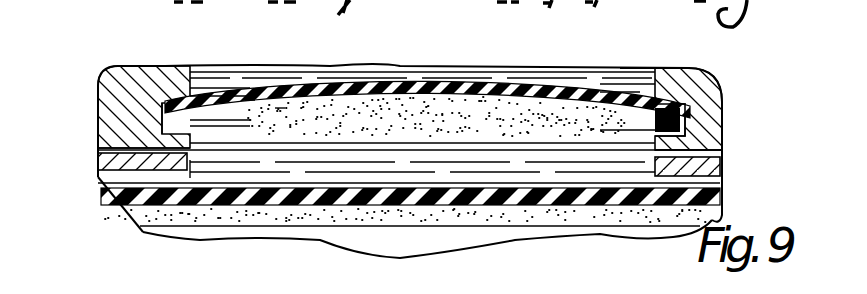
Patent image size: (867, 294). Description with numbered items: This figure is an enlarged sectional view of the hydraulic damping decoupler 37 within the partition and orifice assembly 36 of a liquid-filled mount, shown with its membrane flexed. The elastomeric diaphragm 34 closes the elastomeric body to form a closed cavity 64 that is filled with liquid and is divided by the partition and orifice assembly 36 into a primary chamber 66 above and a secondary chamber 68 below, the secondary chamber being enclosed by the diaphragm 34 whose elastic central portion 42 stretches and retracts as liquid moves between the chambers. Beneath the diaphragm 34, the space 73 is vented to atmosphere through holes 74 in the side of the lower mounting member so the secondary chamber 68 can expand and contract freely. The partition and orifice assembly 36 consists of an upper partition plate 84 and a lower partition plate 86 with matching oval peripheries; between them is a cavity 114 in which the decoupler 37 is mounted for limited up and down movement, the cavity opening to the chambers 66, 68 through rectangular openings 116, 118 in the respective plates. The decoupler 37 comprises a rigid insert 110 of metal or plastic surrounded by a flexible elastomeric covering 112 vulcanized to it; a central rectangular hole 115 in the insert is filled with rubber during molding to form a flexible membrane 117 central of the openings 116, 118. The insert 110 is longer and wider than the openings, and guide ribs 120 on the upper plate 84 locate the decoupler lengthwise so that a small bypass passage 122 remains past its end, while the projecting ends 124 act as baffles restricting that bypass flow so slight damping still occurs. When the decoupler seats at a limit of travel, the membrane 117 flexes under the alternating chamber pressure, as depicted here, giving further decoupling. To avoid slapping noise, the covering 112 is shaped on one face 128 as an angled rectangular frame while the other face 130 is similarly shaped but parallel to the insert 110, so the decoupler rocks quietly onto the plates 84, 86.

The elastomeric diaphragm 34 is at (648, 207).
The partition and orifice assembly 36 is at (100, 115).
The hydraulic damping decoupler 37 is at (412, 75).
The central portion of the diaphragm 42 is at (513, 198).
The closed cavity 64 is at (355, 72).
The primary chamber 66 is at (523, 80).
The secondary chamber 68 is at (432, 185).
The space 73 is at (157, 230).
The holes 74 is at (323, 238).
The upper partition plate 84 is at (704, 91).
The lower partition plate 86 is at (717, 177).
The rigid insert 110 is at (700, 134).
The flexible elastomeric covering 112 is at (638, 97).
The cavity 114 is at (160, 132).
The central rectangular hole 115 is at (250, 100).
The rectangular opening 116 is at (190, 88).
The flexible membrane 117 is at (474, 82).
The rectangular opening 118 is at (187, 165).
The guide ribs 120 is at (125, 98).
The bypass passage 122 is at (177, 97).
The projecting ends 124 is at (103, 167).
The face of the coating 128 is at (255, 92).
The face of the coating 130 is at (280, 108).